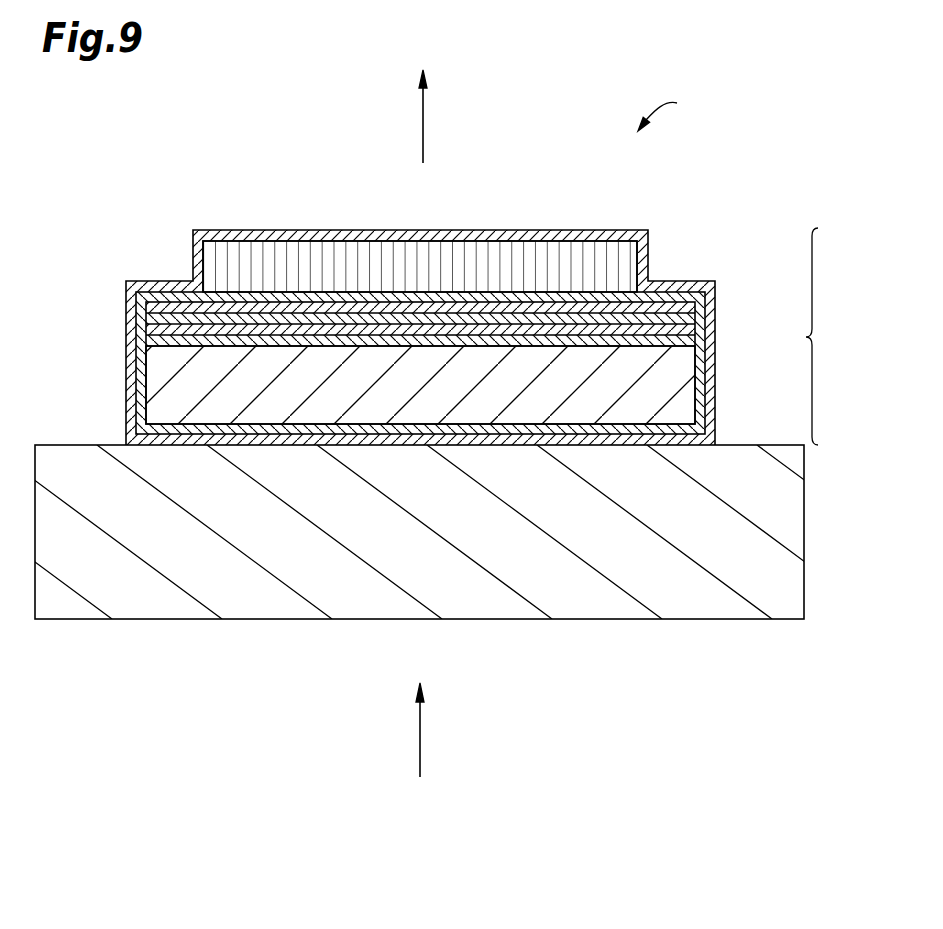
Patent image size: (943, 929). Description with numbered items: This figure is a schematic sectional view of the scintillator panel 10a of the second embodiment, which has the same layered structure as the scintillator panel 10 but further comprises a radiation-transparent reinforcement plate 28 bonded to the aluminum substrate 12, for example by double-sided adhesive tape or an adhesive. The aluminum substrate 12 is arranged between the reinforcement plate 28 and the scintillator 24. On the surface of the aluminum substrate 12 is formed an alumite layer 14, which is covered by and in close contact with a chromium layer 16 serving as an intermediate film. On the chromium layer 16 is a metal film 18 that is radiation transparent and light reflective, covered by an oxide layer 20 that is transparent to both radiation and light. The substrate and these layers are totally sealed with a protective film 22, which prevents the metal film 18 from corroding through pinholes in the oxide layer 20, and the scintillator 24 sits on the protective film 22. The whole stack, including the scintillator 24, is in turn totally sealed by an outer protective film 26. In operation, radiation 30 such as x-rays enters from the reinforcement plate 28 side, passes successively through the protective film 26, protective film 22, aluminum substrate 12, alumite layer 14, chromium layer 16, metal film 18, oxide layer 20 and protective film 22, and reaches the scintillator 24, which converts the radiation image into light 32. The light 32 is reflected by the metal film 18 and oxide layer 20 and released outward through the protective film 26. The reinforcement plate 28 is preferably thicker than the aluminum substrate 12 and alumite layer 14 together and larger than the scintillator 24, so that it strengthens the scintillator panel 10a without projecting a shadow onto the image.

The scintillator panel 10 is at (832, 336).
The scintillator panel 10a is at (713, 92).
The aluminum substrate 12 is at (683, 386).
The alumite layer 14 is at (686, 347).
The chromium layer 16 is at (685, 331).
The metal film 18 is at (683, 313).
The oxide layer 20 is at (679, 293).
The protective film 22 is at (681, 283).
The scintillator 24 is at (598, 260).
The protective film 26 is at (558, 237).
The reinforcement plate 28 is at (788, 532).
The radiation 30 is at (420, 736).
The light 32 is at (423, 121).